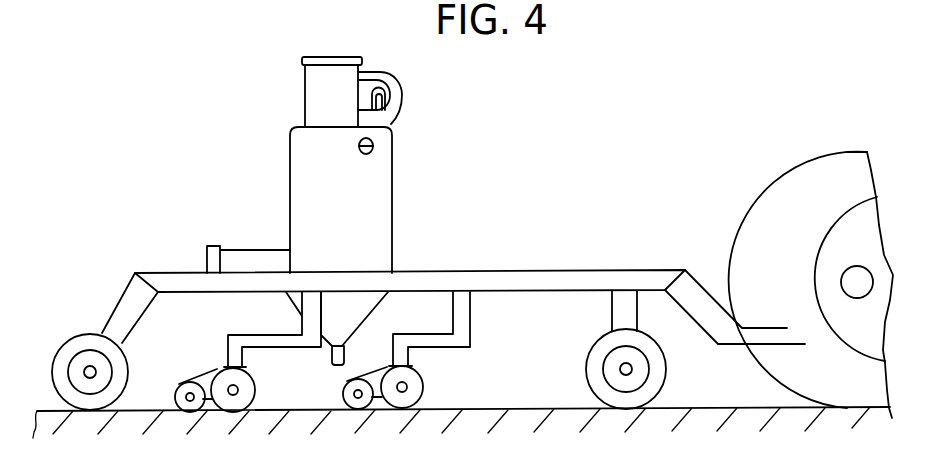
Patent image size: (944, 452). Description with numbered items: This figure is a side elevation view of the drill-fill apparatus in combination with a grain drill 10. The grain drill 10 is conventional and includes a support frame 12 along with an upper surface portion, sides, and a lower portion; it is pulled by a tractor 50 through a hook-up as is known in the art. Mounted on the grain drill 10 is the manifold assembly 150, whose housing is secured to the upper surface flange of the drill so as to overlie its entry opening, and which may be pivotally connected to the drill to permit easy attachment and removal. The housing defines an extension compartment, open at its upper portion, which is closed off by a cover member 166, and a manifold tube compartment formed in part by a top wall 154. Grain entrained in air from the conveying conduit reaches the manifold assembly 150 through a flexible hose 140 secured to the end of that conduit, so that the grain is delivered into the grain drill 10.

The grain drill 10 is at (290, 140).
The support frame 12 is at (588, 271).
The tractor 50 is at (803, 163).
The flexible hose 140 is at (384, 104).
The manifold assembly 150 is at (305, 89).
The top wall 154 is at (392, 84).
The cover member 166 is at (330, 57).